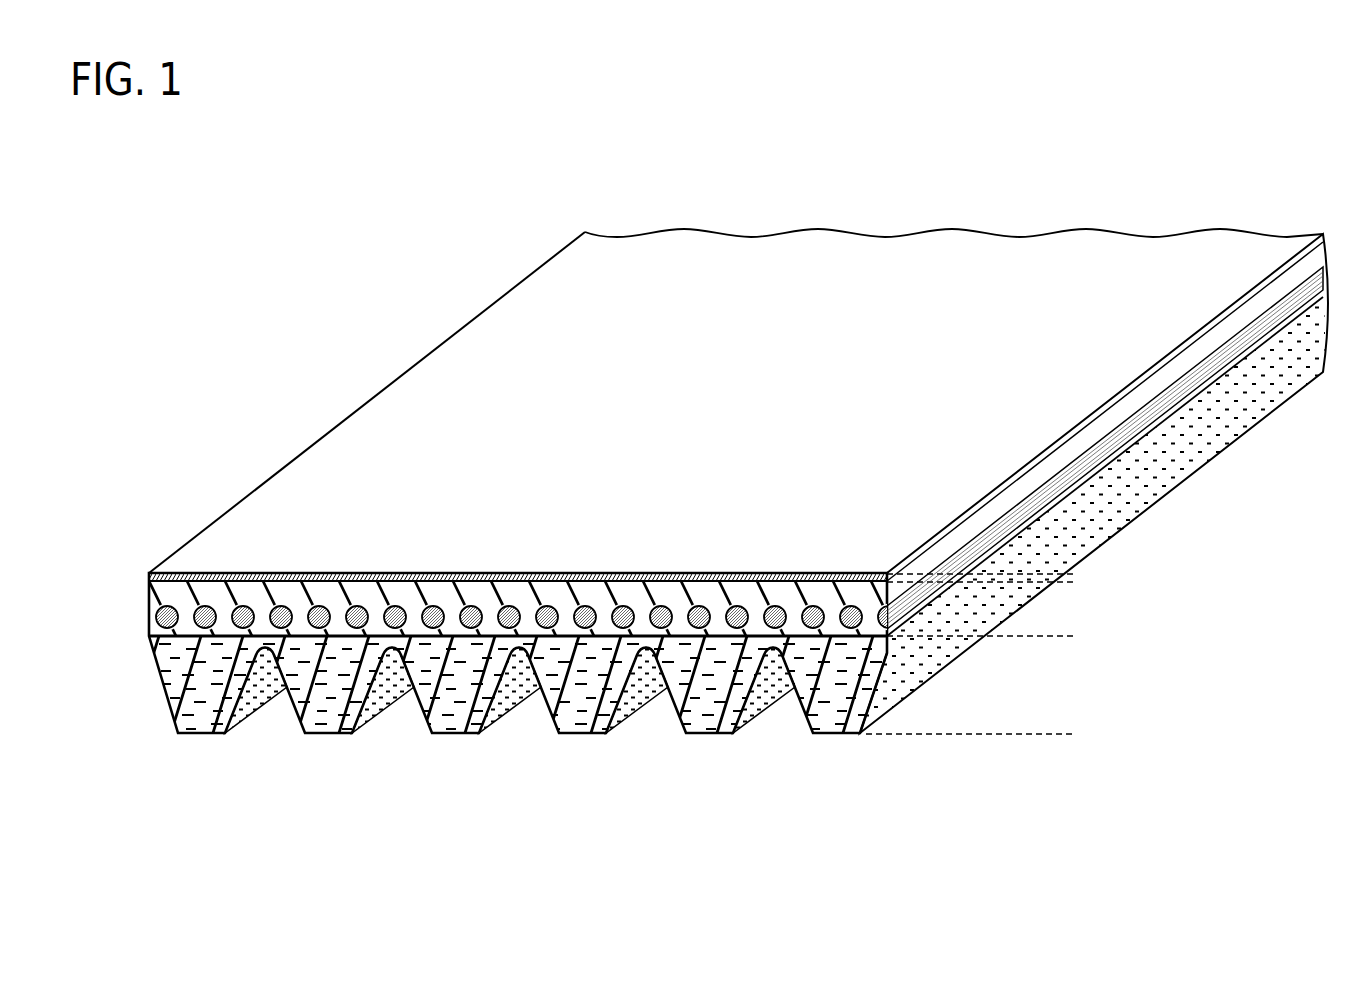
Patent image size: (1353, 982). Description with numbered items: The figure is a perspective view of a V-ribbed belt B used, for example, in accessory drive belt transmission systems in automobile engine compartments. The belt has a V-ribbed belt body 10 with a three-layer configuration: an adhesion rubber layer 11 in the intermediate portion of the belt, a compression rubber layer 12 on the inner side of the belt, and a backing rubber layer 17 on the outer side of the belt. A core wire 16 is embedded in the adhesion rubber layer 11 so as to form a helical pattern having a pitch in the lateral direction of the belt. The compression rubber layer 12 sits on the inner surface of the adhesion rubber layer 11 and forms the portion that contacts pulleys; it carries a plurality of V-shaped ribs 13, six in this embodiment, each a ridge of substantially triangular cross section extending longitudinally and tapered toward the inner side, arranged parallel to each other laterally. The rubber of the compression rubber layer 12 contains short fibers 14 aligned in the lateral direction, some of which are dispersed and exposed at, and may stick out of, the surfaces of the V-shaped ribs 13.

The V-ribbed belt B is at (443, 252).
The V-ribbed belt body 10 is at (1131, 563).
The adhesion rubber layer 11 is at (1074, 584).
The compression rubber layer 12 is at (1074, 638).
The V-shaped ribs 13 is at (199, 734).
The short fibers 14 is at (167, 700).
The core wire 16 is at (156, 616).
The backing rubber layer 17 is at (167, 575).